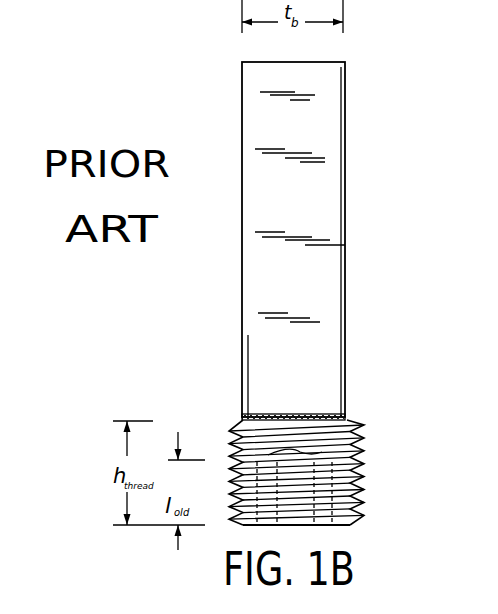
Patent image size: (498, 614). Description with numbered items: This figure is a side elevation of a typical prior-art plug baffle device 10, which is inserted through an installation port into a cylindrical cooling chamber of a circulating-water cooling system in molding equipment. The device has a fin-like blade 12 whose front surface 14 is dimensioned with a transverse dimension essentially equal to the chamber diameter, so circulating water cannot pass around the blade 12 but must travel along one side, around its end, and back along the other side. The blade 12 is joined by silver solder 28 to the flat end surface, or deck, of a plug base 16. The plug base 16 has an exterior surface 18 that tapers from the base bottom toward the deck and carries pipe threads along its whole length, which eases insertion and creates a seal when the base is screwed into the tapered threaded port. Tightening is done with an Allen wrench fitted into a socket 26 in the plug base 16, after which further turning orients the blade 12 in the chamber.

The plug baffle device 10 is at (378, 40).
The blade 12 is at (345, 257).
The front surface 14 is at (315, 202).
The plug base 16 is at (355, 426).
The exterior surface 18 is at (362, 463).
The socket 26 is at (300, 527).
The silver solder 28 is at (348, 417).